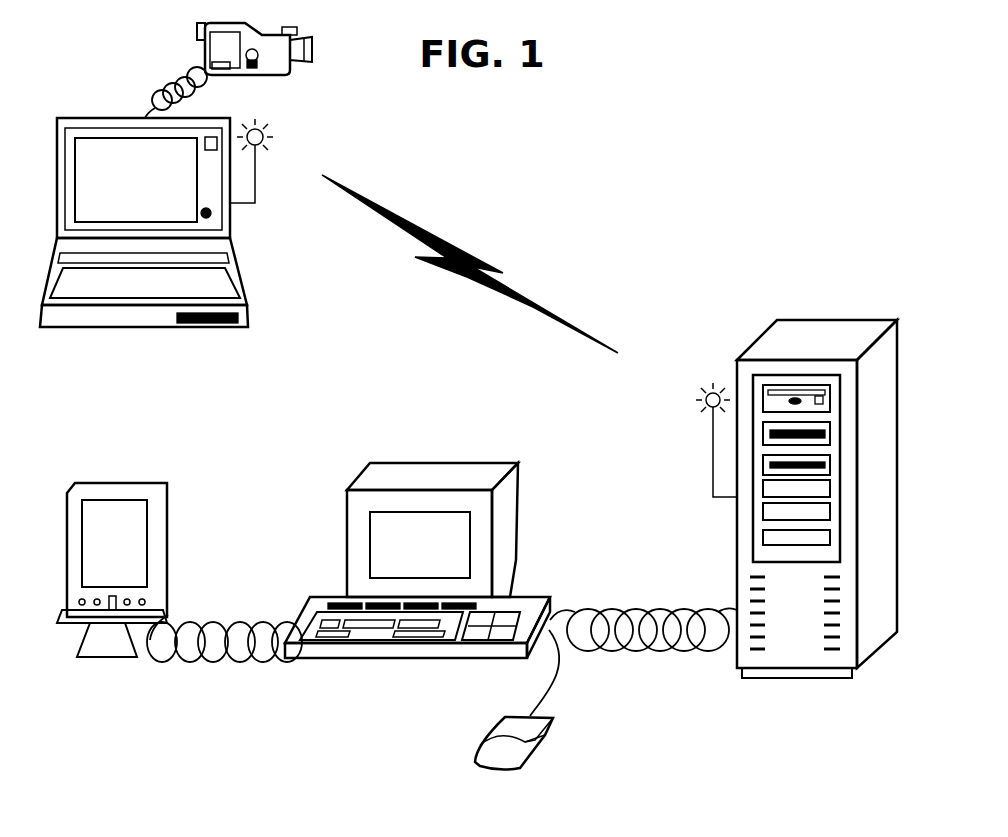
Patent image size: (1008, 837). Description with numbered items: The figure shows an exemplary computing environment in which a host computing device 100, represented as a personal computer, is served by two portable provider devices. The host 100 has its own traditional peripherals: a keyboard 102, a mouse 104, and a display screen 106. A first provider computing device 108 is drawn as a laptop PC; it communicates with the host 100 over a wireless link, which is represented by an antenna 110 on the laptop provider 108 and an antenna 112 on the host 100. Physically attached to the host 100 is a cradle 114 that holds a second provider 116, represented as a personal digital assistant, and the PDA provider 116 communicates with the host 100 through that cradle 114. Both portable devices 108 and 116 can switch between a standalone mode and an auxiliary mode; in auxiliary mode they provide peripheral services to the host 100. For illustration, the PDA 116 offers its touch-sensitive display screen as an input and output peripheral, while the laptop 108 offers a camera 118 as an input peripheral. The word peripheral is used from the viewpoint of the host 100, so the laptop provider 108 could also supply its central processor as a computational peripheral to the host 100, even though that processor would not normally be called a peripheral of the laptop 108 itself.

The host computing device 100 is at (812, 335).
The keyboard 102 is at (305, 600).
The mouse 104 is at (548, 737).
The display screen 106 is at (399, 557).
The first provider computing device 108 is at (112, 194).
The antenna 110 is at (262, 125).
The antenna 112 is at (712, 380).
The cradle 114 is at (168, 617).
The second provider computing device 116 is at (91, 557).
The camera 118 is at (202, 50).